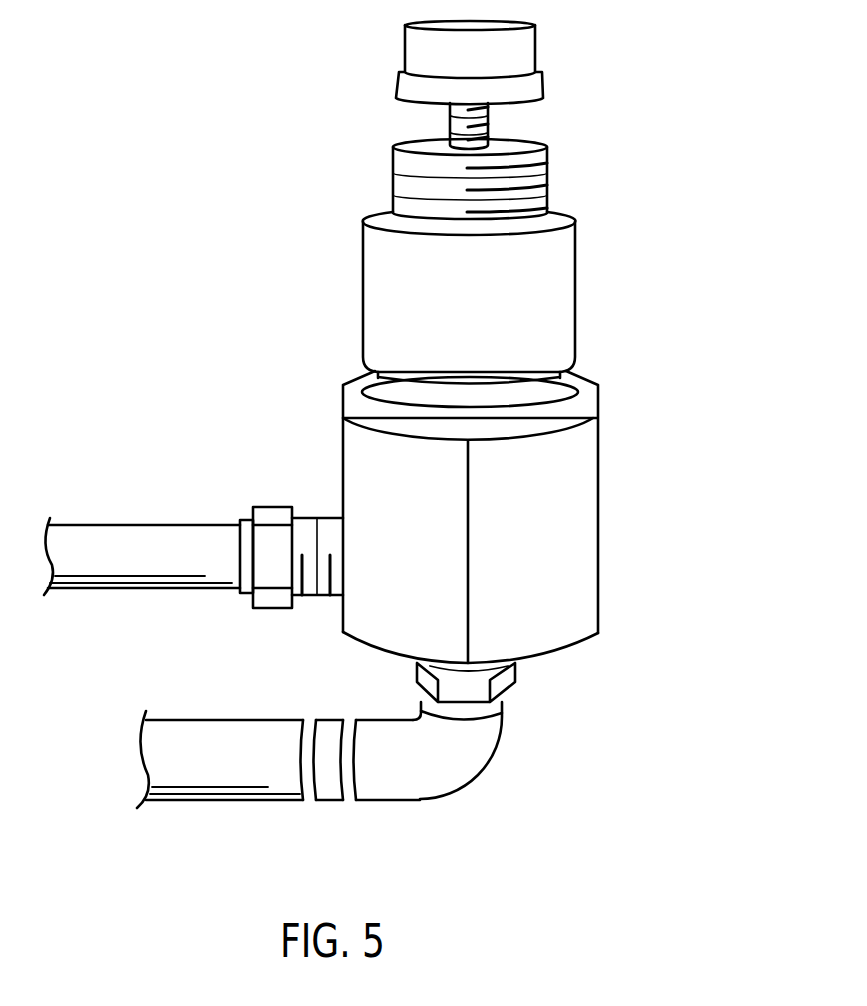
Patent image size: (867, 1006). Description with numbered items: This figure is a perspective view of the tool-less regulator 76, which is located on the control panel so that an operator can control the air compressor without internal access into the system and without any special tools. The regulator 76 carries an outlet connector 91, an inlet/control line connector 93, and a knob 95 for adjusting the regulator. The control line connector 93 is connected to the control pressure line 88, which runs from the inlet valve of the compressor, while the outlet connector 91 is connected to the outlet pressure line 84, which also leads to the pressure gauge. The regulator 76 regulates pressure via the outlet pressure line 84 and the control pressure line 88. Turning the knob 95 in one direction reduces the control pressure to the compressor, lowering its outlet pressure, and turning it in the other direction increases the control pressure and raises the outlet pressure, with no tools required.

The knob 95 is at (534, 50).
The tool-less regulator 76 is at (610, 349).
The inlet/control line connector 93 is at (269, 506).
The control pressure line 88 is at (143, 594).
The outlet pressure line 84 is at (233, 800).
The outlet connector 91 is at (482, 773).